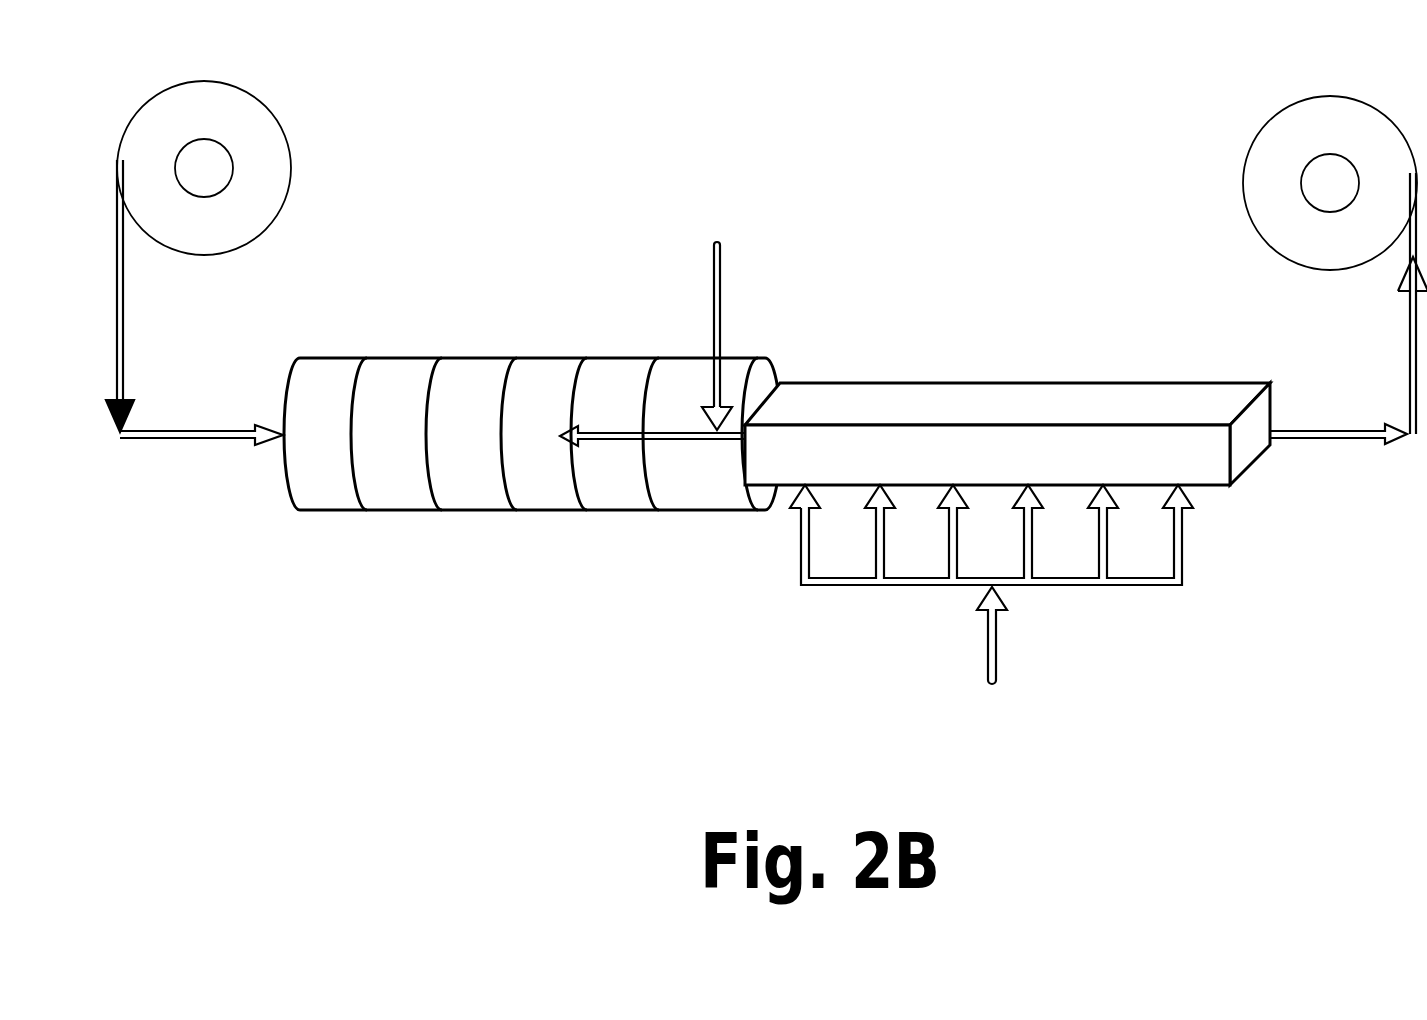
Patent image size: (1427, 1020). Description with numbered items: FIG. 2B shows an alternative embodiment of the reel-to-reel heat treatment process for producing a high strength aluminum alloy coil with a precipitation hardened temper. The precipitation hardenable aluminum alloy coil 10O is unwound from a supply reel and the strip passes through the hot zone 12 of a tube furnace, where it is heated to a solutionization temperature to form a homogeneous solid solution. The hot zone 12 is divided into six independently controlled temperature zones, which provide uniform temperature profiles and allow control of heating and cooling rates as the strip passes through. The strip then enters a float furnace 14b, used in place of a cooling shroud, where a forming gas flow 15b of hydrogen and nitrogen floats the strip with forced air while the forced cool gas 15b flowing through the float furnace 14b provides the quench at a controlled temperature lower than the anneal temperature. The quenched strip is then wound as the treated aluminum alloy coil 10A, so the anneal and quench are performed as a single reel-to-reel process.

The aluminum alloy coil 10O is at (275, 117).
The aluminum alloy coil 10A is at (1275, 120).
The hot zone 12 is at (547, 357).
The float furnace 14b is at (1043, 395).
The forming gas flow 15b is at (1003, 638).